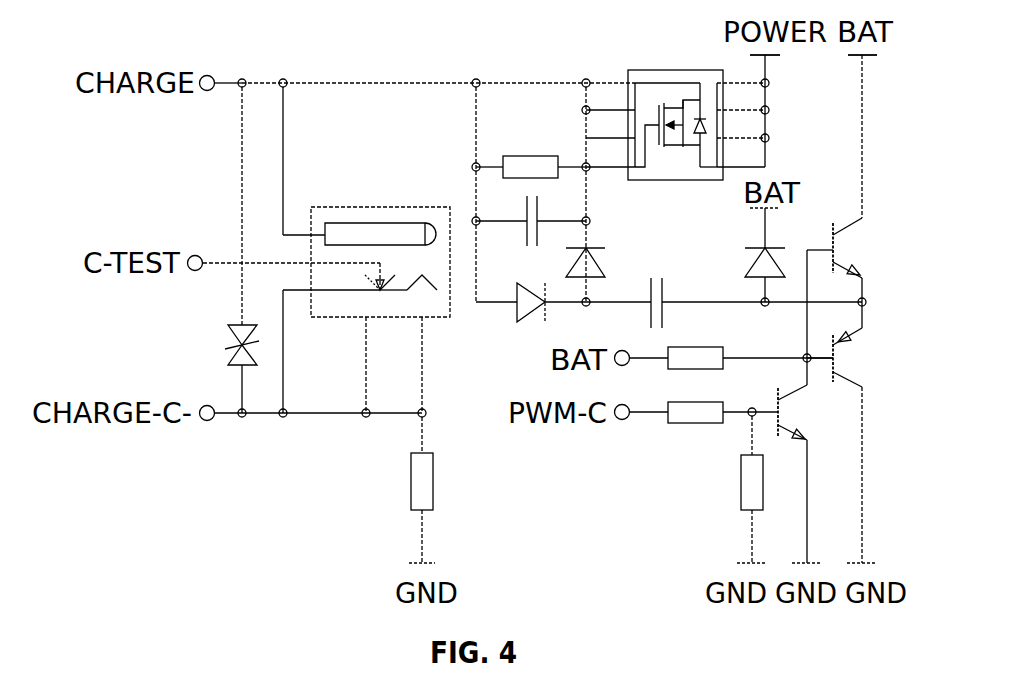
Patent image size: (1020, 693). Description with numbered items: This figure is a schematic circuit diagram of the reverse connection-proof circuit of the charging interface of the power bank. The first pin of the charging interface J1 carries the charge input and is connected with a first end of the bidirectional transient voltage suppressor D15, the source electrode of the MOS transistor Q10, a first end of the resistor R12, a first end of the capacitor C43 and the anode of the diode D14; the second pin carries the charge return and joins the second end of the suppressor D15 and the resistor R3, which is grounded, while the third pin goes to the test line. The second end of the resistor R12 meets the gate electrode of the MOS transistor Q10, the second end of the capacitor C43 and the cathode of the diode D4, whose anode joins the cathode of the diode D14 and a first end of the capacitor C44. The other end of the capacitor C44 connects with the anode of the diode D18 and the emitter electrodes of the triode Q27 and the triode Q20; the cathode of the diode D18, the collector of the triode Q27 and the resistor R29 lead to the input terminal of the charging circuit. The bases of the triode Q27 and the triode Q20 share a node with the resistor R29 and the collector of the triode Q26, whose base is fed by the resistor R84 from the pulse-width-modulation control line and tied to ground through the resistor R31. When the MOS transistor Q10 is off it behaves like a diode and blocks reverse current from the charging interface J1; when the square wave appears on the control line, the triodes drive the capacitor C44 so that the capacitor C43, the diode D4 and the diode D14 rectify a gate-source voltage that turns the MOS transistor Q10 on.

The MOS transistor Q10 is at (675, 103).
The charging interface J1 is at (370, 267).
The resistor R12 is at (530, 146).
The capacitor C43 is at (528, 237).
The diode D4 is at (607, 260).
The diode D14 is at (516, 320).
The capacitor C44 is at (686, 299).
The diode D18 is at (742, 247).
The bidirectional transient voltage suppressor D15 is at (209, 341).
The resistor R3 is at (443, 481).
The electrode tube Q27 is at (855, 248).
The triode Q20 is at (857, 357).
The triode Q26 is at (814, 412).
The resistor R29 is at (675, 375).
The resistor R84 is at (695, 430).
The resistor R31 is at (723, 482).